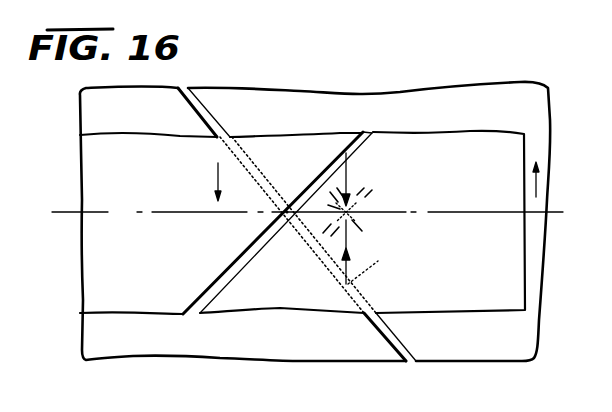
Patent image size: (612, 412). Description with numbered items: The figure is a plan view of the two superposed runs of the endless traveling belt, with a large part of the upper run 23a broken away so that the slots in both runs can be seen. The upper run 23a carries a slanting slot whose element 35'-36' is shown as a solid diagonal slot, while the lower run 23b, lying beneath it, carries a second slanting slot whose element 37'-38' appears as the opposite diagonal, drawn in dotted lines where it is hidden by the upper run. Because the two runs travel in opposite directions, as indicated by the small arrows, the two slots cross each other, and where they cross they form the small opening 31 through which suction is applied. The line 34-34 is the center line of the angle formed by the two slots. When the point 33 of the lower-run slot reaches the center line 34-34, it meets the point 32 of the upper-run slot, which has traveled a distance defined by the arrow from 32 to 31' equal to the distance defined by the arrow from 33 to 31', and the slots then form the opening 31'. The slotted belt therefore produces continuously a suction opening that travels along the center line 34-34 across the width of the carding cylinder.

The upper run of the belt 23a is at (449, 132).
The lower run of the belt 23b is at (481, 84).
The opening 31 is at (297, 192).
The opening 31' is at (366, 236).
The point of the slot 35-36 32 is at (353, 149).
The point of the slot 37-38 33 is at (305, 225).
The center line 34 is at (304, 214).
The element of slot 35-36 35' is at (274, 236).
The element of slot 35-36 36' is at (379, 123).
The element of slot 37-38 37' is at (204, 101).
The element of slot 37-38 38' is at (396, 350).